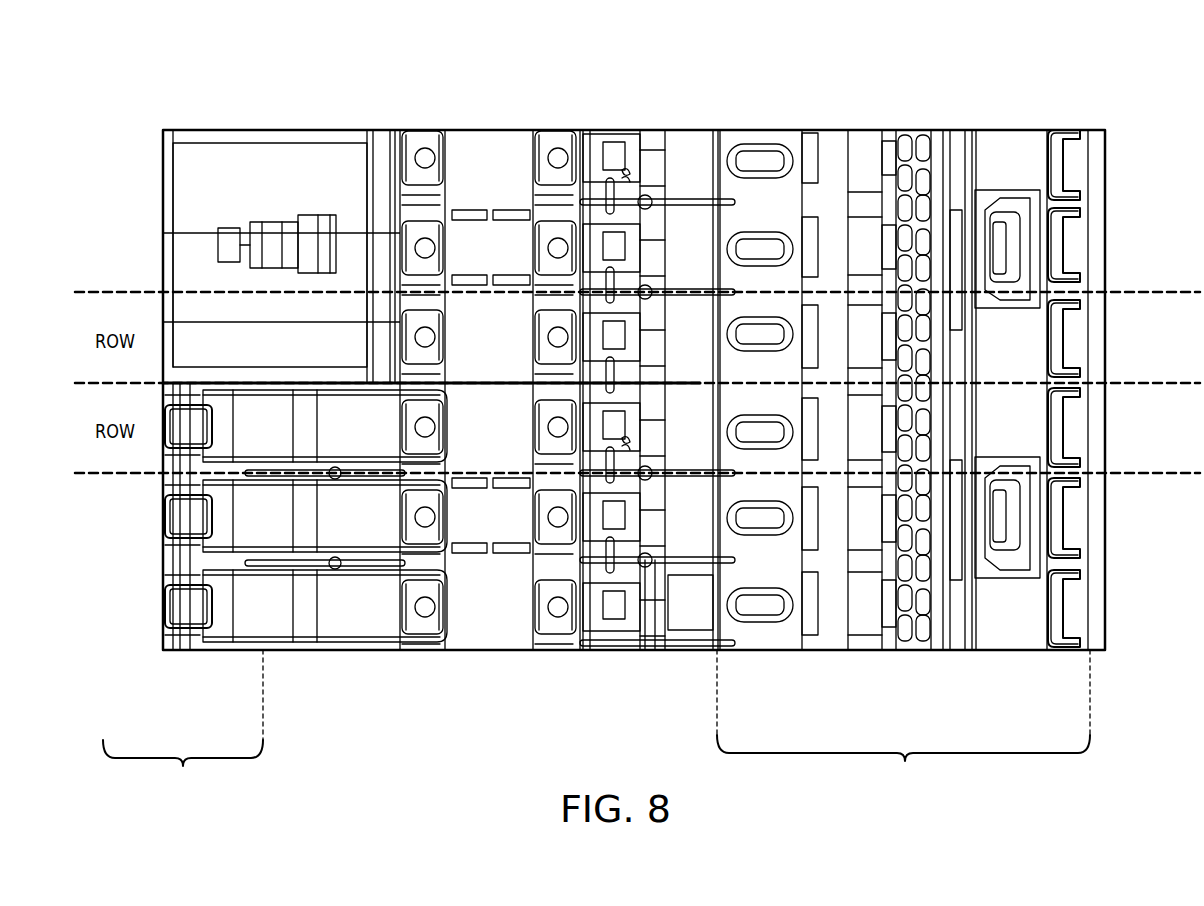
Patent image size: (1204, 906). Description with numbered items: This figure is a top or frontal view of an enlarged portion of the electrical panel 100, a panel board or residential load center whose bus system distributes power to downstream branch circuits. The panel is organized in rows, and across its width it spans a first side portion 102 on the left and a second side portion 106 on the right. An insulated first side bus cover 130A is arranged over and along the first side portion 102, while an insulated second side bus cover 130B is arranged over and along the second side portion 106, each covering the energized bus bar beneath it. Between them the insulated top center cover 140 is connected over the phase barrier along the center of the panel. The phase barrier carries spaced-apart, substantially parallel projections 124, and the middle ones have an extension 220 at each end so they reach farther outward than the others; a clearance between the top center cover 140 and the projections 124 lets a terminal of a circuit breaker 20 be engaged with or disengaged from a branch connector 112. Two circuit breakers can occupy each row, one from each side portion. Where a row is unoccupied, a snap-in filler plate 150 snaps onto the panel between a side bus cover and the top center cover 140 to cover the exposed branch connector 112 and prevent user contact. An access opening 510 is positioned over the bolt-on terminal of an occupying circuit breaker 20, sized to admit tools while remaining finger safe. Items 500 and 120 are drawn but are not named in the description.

The electrical panel 100 is at (127, 99).
The circuit breaker 20 is at (267, 163).
The access opening 510 is at (427, 125).
The mounting bracket 500 is at (513, 147).
The branch connector 112 is at (600, 160).
The projections 124 is at (627, 178).
The extension 220 is at (722, 292).
The snap-in filler plate 150 is at (432, 500).
The top center cover 140 is at (483, 655).
The first side bus cover 130A is at (230, 652).
The second side bus cover 130B is at (997, 652).
The first side portion 102 is at (183, 721).
The second side portion 106 is at (903, 461).
The carrier 120 is at (622, 652).